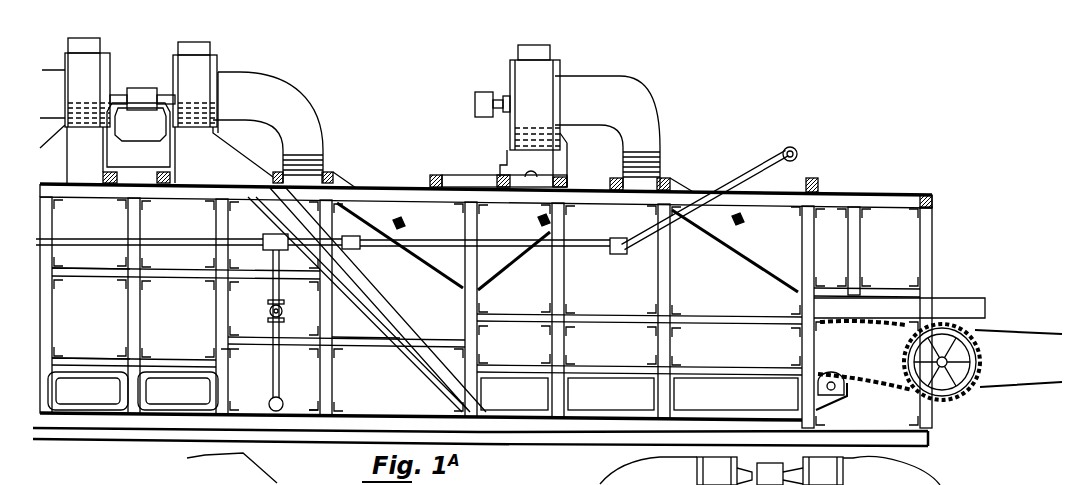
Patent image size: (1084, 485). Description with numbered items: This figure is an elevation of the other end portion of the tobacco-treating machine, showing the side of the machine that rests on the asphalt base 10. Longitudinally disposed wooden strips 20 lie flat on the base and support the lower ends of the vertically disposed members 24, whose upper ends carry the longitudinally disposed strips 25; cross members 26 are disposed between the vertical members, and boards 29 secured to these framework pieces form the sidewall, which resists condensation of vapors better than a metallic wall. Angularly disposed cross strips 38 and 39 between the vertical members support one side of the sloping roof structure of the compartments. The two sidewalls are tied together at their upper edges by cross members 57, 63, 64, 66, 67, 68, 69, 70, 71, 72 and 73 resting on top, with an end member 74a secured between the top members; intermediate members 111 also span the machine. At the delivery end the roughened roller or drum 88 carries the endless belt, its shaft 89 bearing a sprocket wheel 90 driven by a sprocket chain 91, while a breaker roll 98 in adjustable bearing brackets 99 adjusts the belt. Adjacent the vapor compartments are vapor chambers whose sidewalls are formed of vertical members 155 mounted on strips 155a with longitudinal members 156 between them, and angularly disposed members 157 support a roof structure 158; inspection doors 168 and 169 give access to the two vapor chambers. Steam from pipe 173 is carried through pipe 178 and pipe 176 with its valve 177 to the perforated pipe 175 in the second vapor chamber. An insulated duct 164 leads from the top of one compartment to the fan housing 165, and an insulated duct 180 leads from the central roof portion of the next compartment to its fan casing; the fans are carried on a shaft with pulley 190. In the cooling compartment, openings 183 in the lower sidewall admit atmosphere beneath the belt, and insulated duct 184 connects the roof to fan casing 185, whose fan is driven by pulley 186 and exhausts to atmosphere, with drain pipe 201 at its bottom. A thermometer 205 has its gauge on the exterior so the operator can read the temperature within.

The asphalt base 10 is at (150, 442).
The longitudinally disposed strips 20 is at (861, 434).
The vertically disposed members 24 is at (332, 223).
The longitudinally disposed strips 25 is at (885, 196).
The cross members 26 is at (523, 345).
The boards 29 is at (698, 285).
The angularly disposed cross strip 38 is at (519, 268).
The angularly disposed cross strip 39 is at (758, 263).
The cross member 57 is at (370, 211).
The cross member 63 is at (133, 168).
The cross member 64 is at (152, 168).
The cross member 66 is at (273, 170).
The cross member 67 is at (329, 171).
The cross member 68 is at (430, 174).
The cross member 69 is at (492, 174).
The cross member 70 is at (567, 172).
The cross member 71 is at (621, 175).
The cross member 72 is at (668, 172).
The cross member 73 is at (817, 175).
The end member 74a is at (931, 198).
The roughened roller or drum 88 is at (907, 341).
The shaft 89 is at (907, 367).
The sprocket wheel 90 is at (985, 362).
The sprocket chain 91 is at (1049, 332).
The breaker roll 98 is at (845, 388).
The adjustable bearing brackets 99 is at (837, 402).
The intermediate members 111 is at (582, 217).
The vertical members 155 is at (113, 313).
The strips 155a is at (280, 417).
The longitudinal members 156 is at (111, 266).
The angularly disposed members 157 is at (383, 318).
The roof structure 158 is at (419, 319).
The insulated duct 164 is at (50, 70).
The fan housing 165 is at (96, 45).
The inspection door 168 is at (88, 391).
The inspection door 169 is at (178, 391).
The pipe 173 is at (87, 240).
The perforated pipe 175 is at (757, 170).
The pipe 176 is at (270, 340).
The valve 177 is at (268, 320).
The pipe 178 is at (272, 318).
The insulated duct 180 is at (300, 90).
The openings 183 is at (639, 394).
The insulated duct 184 is at (645, 102).
The fan casing 185 is at (515, 51).
The pulley 186 is at (483, 90).
The pulley 190 is at (155, 80).
The drain pipe 201 is at (524, 183).
The thermometer 205 is at (963, 300).